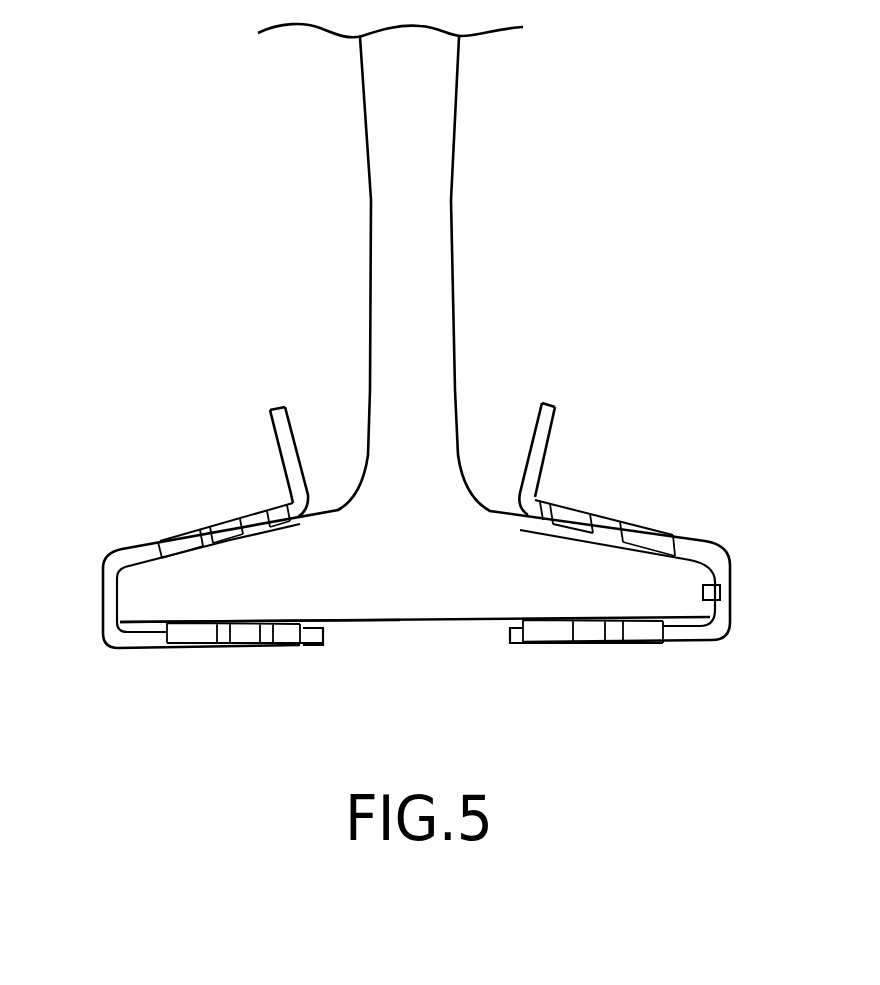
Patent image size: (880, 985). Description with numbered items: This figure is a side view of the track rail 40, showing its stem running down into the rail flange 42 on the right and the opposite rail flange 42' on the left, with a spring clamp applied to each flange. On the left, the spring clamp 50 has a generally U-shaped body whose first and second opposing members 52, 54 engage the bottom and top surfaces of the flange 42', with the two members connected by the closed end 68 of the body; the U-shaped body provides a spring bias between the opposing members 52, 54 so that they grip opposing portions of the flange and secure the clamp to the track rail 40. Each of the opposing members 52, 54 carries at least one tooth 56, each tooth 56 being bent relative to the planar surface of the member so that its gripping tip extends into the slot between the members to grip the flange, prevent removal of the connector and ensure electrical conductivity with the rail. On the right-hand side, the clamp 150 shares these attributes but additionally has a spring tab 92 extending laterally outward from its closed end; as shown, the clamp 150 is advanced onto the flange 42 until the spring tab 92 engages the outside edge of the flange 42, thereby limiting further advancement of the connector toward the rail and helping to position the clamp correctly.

The track rail 40 is at (426, 94).
The rail flange 42 is at (415, 594).
The rail flange 42' is at (260, 594).
The spring clamp 50 is at (203, 571).
The first opposing member 52 is at (162, 652).
The second opposing member 54 is at (132, 543).
The tooth 56 is at (190, 533).
The closed end 68 is at (108, 593).
The spring tab 92 is at (720, 583).
The clamp 150 is at (708, 647).